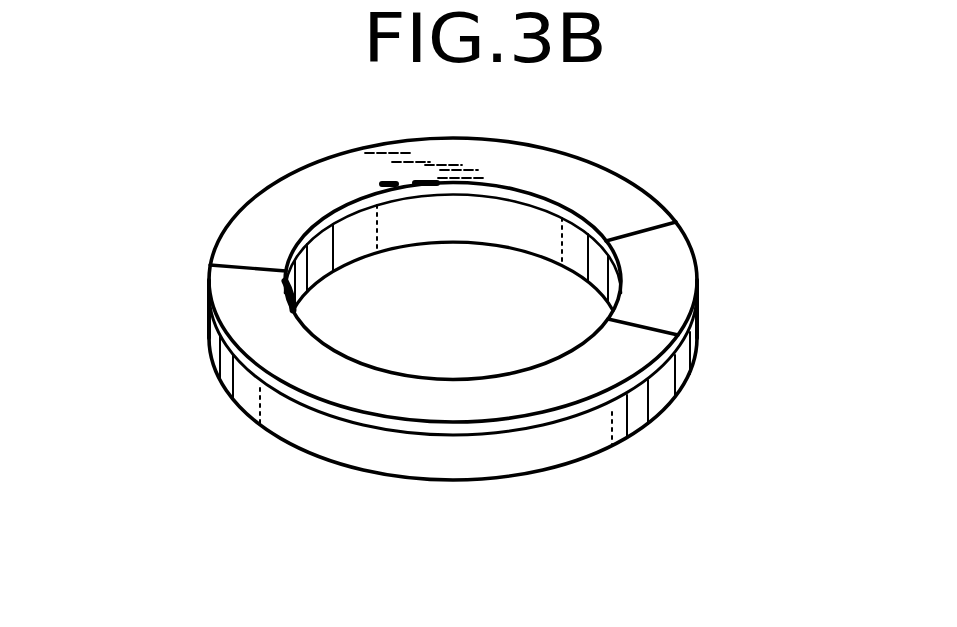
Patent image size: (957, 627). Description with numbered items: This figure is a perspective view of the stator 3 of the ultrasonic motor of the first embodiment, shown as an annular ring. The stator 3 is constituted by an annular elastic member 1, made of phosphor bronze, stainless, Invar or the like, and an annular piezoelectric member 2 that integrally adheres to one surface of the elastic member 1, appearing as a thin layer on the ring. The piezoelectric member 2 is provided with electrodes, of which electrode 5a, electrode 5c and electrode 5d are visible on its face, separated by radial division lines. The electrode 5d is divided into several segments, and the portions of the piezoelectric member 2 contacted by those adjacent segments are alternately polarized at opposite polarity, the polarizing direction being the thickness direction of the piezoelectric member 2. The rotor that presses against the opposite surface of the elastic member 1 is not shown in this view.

The elastic member 1 is at (308, 437).
The piezoelectric member 2 is at (615, 397).
The stator 3 is at (172, 399).
The electrode 5a is at (612, 200).
The electrode 5c is at (665, 283).
The electrode 5d is at (232, 292).